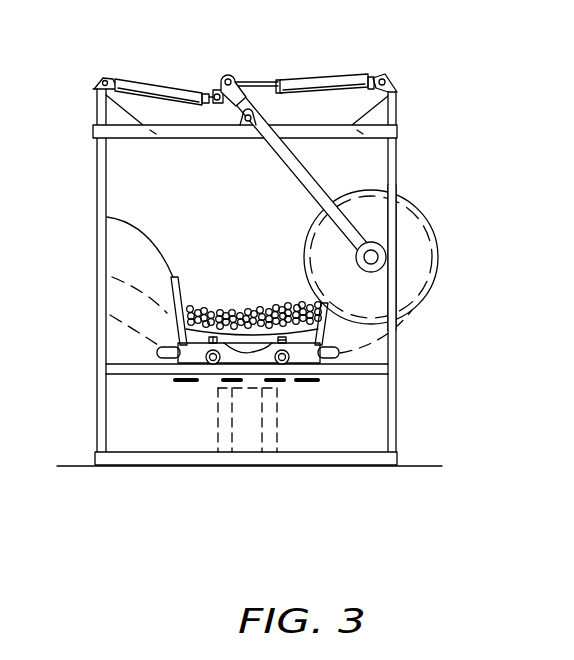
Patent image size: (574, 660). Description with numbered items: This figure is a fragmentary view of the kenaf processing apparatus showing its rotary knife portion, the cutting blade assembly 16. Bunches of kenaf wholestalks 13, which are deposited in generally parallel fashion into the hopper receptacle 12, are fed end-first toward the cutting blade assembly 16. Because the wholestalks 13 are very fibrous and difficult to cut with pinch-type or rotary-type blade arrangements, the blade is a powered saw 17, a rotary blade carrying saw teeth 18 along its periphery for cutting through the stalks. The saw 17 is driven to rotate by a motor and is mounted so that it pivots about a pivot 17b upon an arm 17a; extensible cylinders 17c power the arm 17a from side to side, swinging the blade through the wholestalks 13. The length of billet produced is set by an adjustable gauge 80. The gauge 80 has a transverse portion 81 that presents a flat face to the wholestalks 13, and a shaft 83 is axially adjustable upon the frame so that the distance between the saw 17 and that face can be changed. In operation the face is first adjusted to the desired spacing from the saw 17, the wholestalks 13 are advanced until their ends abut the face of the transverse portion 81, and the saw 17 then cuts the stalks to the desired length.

The receptacle 12 is at (107, 217).
The kenaf wholestalks 13 is at (272, 310).
The cutting blade assembly 16 is at (446, 94).
The powered saw 17 is at (396, 258).
The arm 17a is at (283, 198).
The pivot 17b is at (247, 128).
The extensible cylinders 17c is at (170, 88).
The saw teeth 18 is at (427, 300).
The gauge 80 is at (303, 355).
The transverse portion 81 is at (190, 355).
The shaft 83 is at (212, 361).